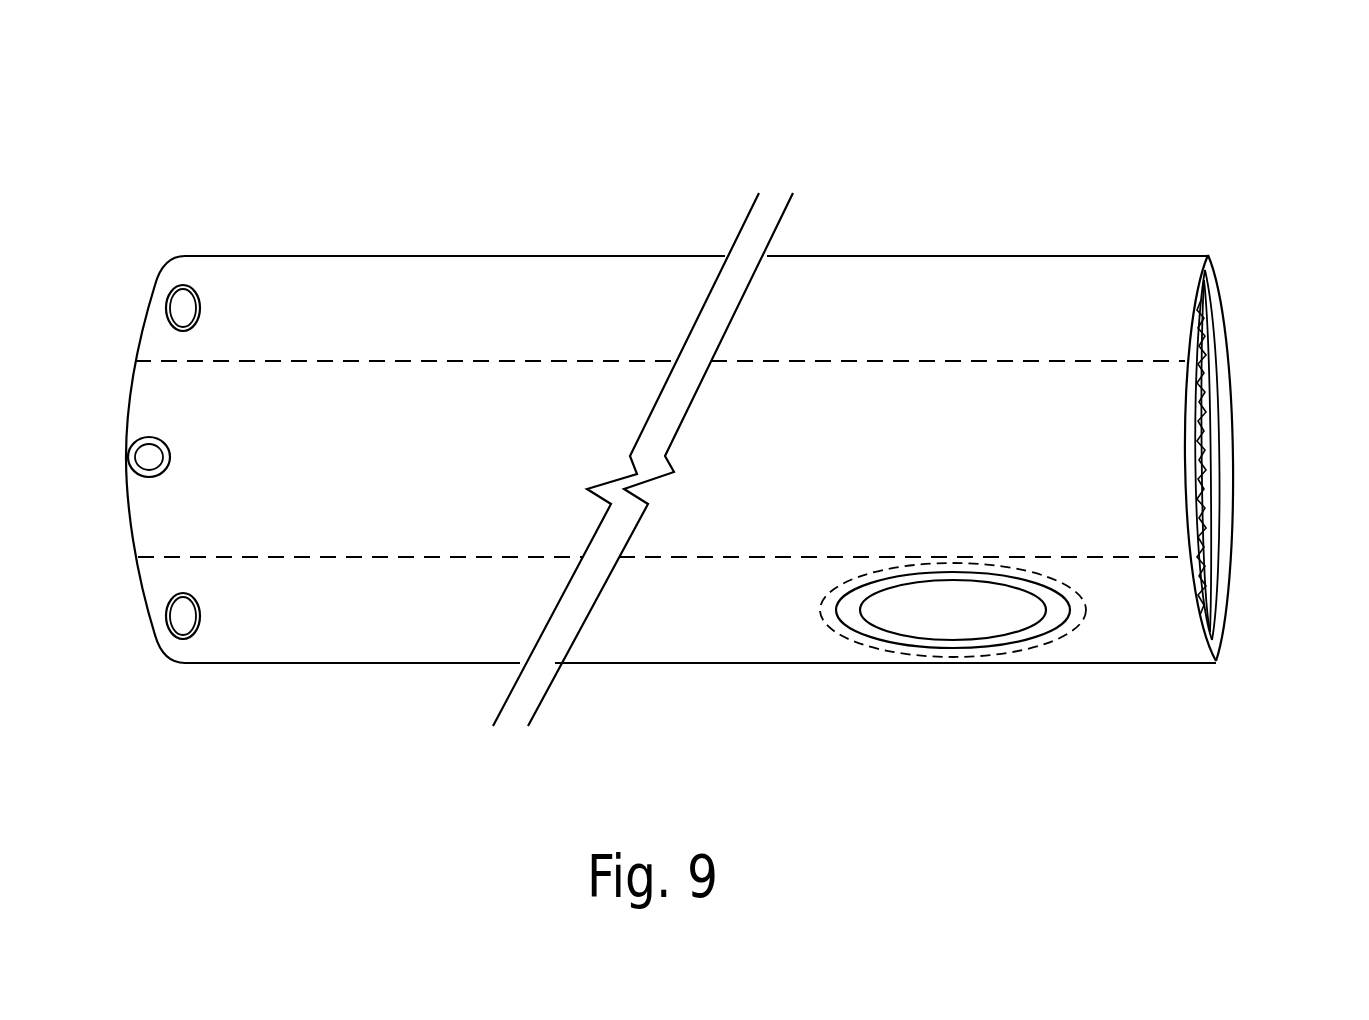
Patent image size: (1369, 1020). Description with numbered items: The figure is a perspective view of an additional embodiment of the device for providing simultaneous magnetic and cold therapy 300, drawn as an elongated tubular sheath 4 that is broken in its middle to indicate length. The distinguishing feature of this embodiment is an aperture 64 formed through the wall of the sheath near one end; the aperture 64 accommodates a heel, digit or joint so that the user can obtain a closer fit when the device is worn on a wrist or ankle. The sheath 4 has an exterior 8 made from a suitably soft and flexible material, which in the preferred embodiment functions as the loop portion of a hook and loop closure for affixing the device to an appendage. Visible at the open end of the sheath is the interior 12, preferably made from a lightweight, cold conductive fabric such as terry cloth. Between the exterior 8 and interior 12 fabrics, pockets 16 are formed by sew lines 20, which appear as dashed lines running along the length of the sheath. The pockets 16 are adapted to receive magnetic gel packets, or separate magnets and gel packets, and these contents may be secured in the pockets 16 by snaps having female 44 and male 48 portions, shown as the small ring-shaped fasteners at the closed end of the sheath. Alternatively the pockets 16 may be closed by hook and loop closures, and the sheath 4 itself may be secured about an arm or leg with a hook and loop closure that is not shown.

The device for providing simultaneous magnetic and cold therapy 300 is at (680, 145).
The sheath 4 is at (362, 313).
The exterior 8 is at (547, 293).
The interior 12 is at (1202, 359).
The pockets 16 is at (1117, 292).
The sew lines 20 is at (937, 360).
The female portion of snap 44 is at (167, 310).
The male portion of snap 48 is at (182, 307).
The aperture 64 is at (975, 625).